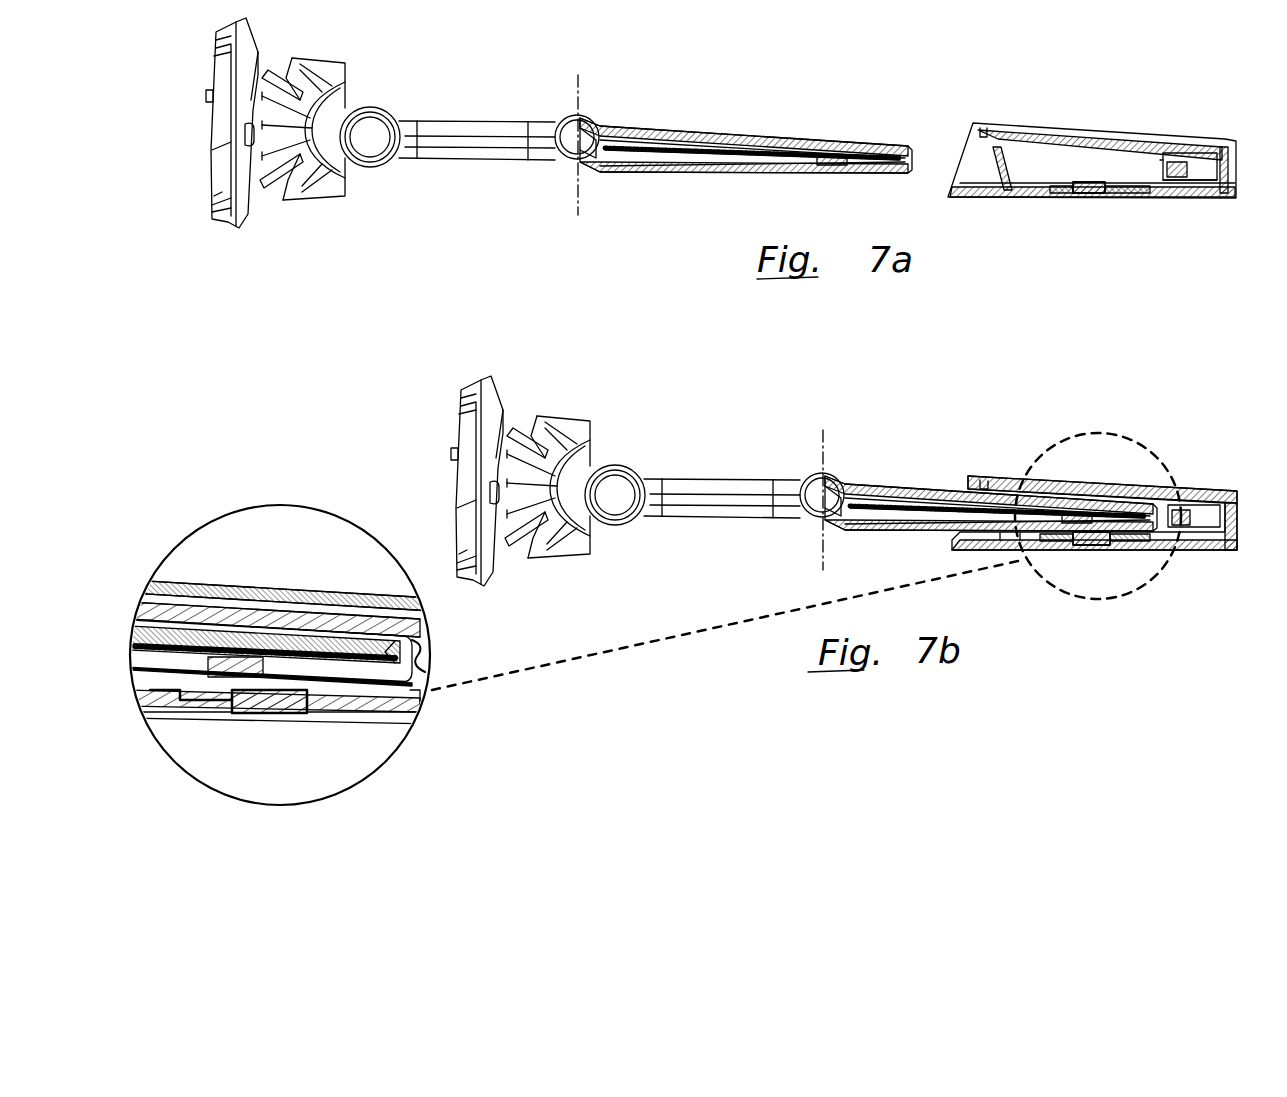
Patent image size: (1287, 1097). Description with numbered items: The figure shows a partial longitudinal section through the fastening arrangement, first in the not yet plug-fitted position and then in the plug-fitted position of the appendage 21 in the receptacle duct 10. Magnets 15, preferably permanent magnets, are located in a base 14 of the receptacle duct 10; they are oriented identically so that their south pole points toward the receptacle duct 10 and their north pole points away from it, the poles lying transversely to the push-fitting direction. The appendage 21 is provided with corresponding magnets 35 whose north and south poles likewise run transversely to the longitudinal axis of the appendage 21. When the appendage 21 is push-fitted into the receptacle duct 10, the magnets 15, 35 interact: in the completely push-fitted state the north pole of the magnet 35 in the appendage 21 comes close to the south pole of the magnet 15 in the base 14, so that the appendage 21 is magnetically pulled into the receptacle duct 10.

In FIG. 7A, the receptacle duct 10 is at (1092, 164).
In FIG. 7A, the base 14 is at (1152, 197).
In FIG. 7A, the magnet 15 is at (1093, 197).
In FIG. 7B, the magnet 15 is at (1097, 548).
In FIG. 7A, the appendage 21 is at (682, 128).
In FIG. 7A, the magnet 35 is at (825, 152).
In FIG. 7B, the magnet 35 is at (1057, 505).